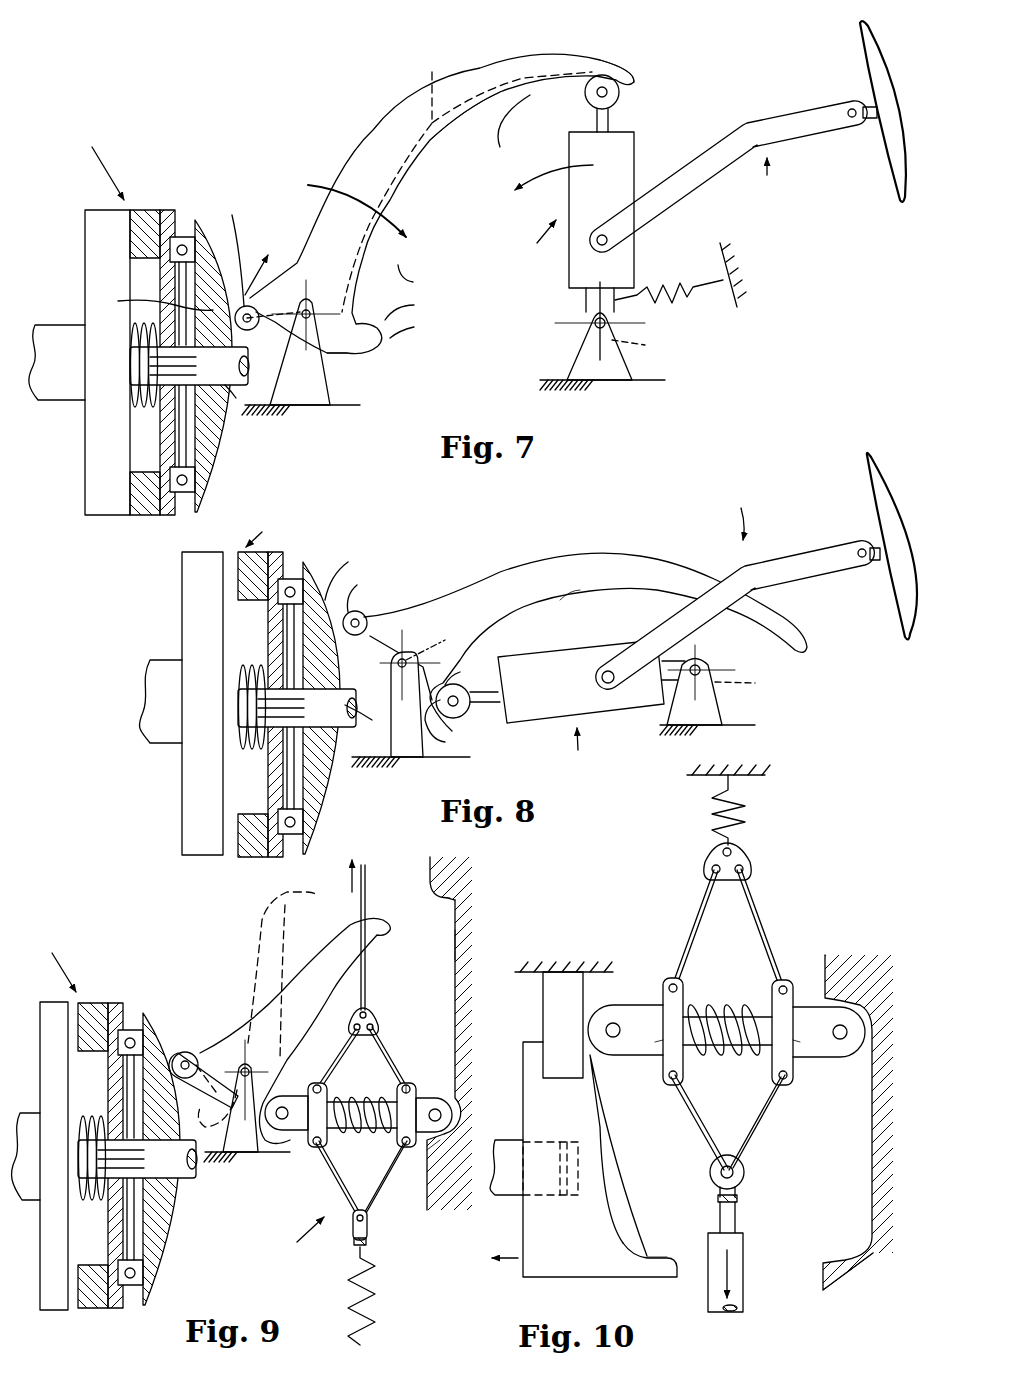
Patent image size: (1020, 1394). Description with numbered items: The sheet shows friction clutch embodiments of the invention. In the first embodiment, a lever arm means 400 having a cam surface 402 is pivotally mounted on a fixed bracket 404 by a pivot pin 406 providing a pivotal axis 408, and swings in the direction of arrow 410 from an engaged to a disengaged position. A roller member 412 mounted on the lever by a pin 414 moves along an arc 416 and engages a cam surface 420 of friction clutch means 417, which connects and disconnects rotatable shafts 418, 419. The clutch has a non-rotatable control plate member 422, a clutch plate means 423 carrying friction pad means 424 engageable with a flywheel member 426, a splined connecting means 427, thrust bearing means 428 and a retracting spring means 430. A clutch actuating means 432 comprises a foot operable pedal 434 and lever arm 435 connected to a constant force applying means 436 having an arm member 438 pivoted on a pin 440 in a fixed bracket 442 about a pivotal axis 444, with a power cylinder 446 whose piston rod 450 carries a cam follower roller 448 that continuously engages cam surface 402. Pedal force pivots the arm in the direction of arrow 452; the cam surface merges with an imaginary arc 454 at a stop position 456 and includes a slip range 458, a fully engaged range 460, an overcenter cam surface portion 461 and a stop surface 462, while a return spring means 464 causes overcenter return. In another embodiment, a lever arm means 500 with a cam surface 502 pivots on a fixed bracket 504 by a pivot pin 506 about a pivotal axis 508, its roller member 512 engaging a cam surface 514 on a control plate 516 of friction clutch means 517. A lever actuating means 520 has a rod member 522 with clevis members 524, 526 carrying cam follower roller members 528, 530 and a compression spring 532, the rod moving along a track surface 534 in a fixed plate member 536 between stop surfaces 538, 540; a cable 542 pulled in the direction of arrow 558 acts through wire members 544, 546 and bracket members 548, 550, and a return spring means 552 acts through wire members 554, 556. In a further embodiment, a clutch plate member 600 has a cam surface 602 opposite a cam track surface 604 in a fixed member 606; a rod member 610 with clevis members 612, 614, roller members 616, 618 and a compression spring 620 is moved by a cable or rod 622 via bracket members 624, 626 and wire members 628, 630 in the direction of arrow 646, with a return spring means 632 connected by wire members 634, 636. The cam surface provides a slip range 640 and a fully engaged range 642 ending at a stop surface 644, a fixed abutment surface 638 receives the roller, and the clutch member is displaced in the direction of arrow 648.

In FIG. 7, the lever arm means 400 is at (375, 132).
In FIG. 8, the lever arm means 400 is at (572, 565).
In FIG. 7, the cam surface 402 is at (438, 160).
In FIG. 8, the cam surface 402 is at (567, 598).
In FIG. 7, the fixed bracket 404 is at (325, 405).
In FIG. 8, the fixed bracket 404 is at (412, 770).
In FIG. 7, the pivot pin 406 is at (300, 290).
In FIG. 8, the pivot pin 406 is at (410, 665).
In FIG. 7, the pivotal axis 408 is at (357, 352).
In FIG. 8, the pivotal axis 408 is at (443, 639).
In FIG. 7, the arrow 410 is at (350, 201).
In FIG. 7, the roller member 412 is at (232, 215).
In FIG. 8, the roller member 412 is at (372, 588).
In FIG. 7, the pin 414 is at (250, 330).
In FIG. 8, the pin 414 is at (368, 615).
In FIG. 7, the arc 416 is at (240, 265).
In FIG. 7, the friction clutch means 417 is at (100, 163).
In FIG. 8, the friction clutch means 417 is at (273, 530).
In FIG. 7, the rotatable shaft 418 is at (62, 392).
In FIG. 8, the rotatable shaft 418 is at (155, 718).
In FIG. 7, the rotatable shaft 419 is at (247, 398).
In FIG. 8, the rotatable shaft 419 is at (378, 717).
In FIG. 7, the cam surface 420 is at (151, 298).
In FIG. 8, the cam surface 420 is at (353, 571).
In FIG. 7, the control plate member 422 is at (215, 455).
In FIG. 8, the control plate member 422 is at (320, 795).
In FIG. 7, the clutch plate means 423 is at (170, 210).
In FIG. 8, the clutch plate means 423 is at (273, 860).
In FIG. 7, the friction pad means 424 is at (146, 210).
In FIG. 8, the friction pad means 424 is at (248, 855).
In FIG. 7, the flywheel member 426 is at (86, 204).
In FIG. 8, the flywheel member 426 is at (190, 810).
In FIG. 7, the splined connecting means 427 is at (160, 405).
In FIG. 8, the splined connecting means 427 is at (265, 740).
In FIG. 7, the thrust bearing means 428 is at (185, 495).
In FIG. 8, the thrust bearing means 428 is at (295, 575).
In FIG. 7, the retracting spring means 430 is at (133, 358).
In FIG. 8, the retracting spring means 430 is at (242, 672).
In FIG. 7, the clutch actuating means 432 is at (770, 184).
In FIG. 8, the clutch actuating means 432 is at (734, 510).
In FIG. 7, the foot operable pedal 434 is at (850, 48).
In FIG. 8, the foot operable pedal 434 is at (870, 488).
In FIG. 7, the lever arm 435 is at (740, 130).
In FIG. 8, the lever arm 435 is at (758, 572).
In FIG. 7, the constant force applying means 436 is at (550, 240).
In FIG. 8, the constant force applying means 436 is at (588, 722).
In FIG. 7, the arm member 438 is at (586, 300).
In FIG. 8, the arm member 438 is at (688, 660).
In FIG. 7, the pin 440 is at (595, 325).
In FIG. 8, the pin 440 is at (705, 665).
In FIG. 7, the fixed bracket 442 is at (620, 368).
In FIG. 8, the fixed bracket 442 is at (708, 716).
In FIG. 7, the pivotal axis 444 is at (649, 346).
In FIG. 8, the pivotal axis 444 is at (752, 683).
In FIG. 7, the power cylinder 446 is at (634, 160).
In FIG. 8, the power cylinder 446 is at (590, 705).
In FIG. 7, the cam follower roller 448 is at (620, 100).
In FIG. 8, the cam follower roller 448 is at (470, 715).
In FIG. 7, the piston rod 450 is at (610, 122).
In FIG. 8, the piston rod 450 is at (487, 700).
In FIG. 7, the arrow 452 is at (540, 185).
In FIG. 7, the imaginary arc 454 is at (432, 76).
In FIG. 7, the stop position 456 is at (585, 62).
In FIG. 7, the slip range 458 is at (425, 277).
In FIG. 7, the fully engaged range 460 is at (519, 128).
In FIG. 7, the overcenter cam surface portion 461 is at (417, 307).
In FIG. 8, the overcenter cam surface portion 461 is at (471, 671).
In FIG. 7, the stop surface 462 is at (419, 326).
In FIG. 8, the stop surface 462 is at (452, 728).
In FIG. 7, the return spring means 464 is at (648, 275).
In FIG. 9, the lever arm means 500 is at (262, 932).
In FIG. 9, the cam surface 502 is at (360, 990).
In FIG. 9, the fixed bracket 504 is at (235, 1158).
In FIG. 9, the pivot pin 506 is at (250, 1140).
In FIG. 9, the pivotal axis 508 is at (235, 1040).
In FIG. 9, the roller member 512 is at (158, 1065).
In FIG. 9, the cam surface 514 is at (120, 1090).
In FIG. 9, the control plate 516 is at (158, 1240).
In FIG. 9, the friction clutch means 517 is at (56, 1122).
In FIG. 9, the lever actuating means 520 is at (291, 1236).
In FIG. 9, the rod member 522 is at (392, 1042).
In FIG. 9, the clevis member 524 is at (280, 1145).
In FIG. 9, the clevis member 526 is at (425, 1150).
In FIG. 9, the cam follower roller member 528 is at (295, 1085).
In FIG. 9, the cam follower roller member 530 is at (462, 1080).
In FIG. 9, the compression spring 532 is at (338, 1138).
In FIG. 9, the track surface 534 is at (452, 940).
In FIG. 9, the fixed plate member 536 is at (462, 878).
In FIG. 9, the stop surface 538 is at (445, 900).
In FIG. 9, the stop surface 540 is at (438, 1150).
In FIG. 9, the cable 542 is at (370, 875).
In FIG. 9, the wire member 544 is at (338, 1078).
In FIG. 9, the wire member 546 is at (398, 1065).
In FIG. 9, the bracket member 548 is at (330, 1175).
In FIG. 9, the bracket member 550 is at (406, 1083).
In FIG. 9, the return spring means 552 is at (376, 1308).
In FIG. 9, the wire member 554 is at (350, 1215).
In FIG. 9, the wire member 556 is at (380, 1222).
In FIG. 9, the arrow 558 is at (348, 890).
In FIG. 10, the clutch plate member 600 is at (580, 1280).
In FIG. 10, the cam surface 602 is at (633, 1205).
In FIG. 10, the cam track surface 604 is at (875, 1150).
In FIG. 10, the fixed member 606 is at (823, 1275).
In FIG. 10, the rod member 610 is at (710, 1000).
In FIG. 10, the clevis member 612 is at (640, 1000).
In FIG. 10, the clevis member 614 is at (812, 1005).
In FIG. 10, the roller member 616 is at (650, 1066).
In FIG. 10, the roller member 618 is at (840, 1078).
In FIG. 10, the compression spring 620 is at (718, 1080).
In FIG. 10, the cable or rod 622 is at (708, 1290).
In FIG. 10, the bracket member 624 is at (670, 1095).
In FIG. 10, the bracket member 626 is at (792, 1085).
In FIG. 10, the wire member 628 is at (700, 1130).
In FIG. 10, the wire member 630 is at (758, 1135).
In FIG. 10, the return spring means 632 is at (748, 812).
In FIG. 10, the wire member 634 is at (698, 902).
In FIG. 10, the wire member 636 is at (752, 905).
In FIG. 10, the fixed abutment surface 638 is at (590, 1000).
In FIG. 10, the slip range 640 is at (590, 1125).
In FIG. 10, the fully engaged range 642 is at (604, 1200).
In FIG. 10, the stop surface 644 is at (648, 1255).
In FIG. 10, the arrow 646 is at (745, 1258).
In FIG. 10, the arrow 648 is at (510, 1255).